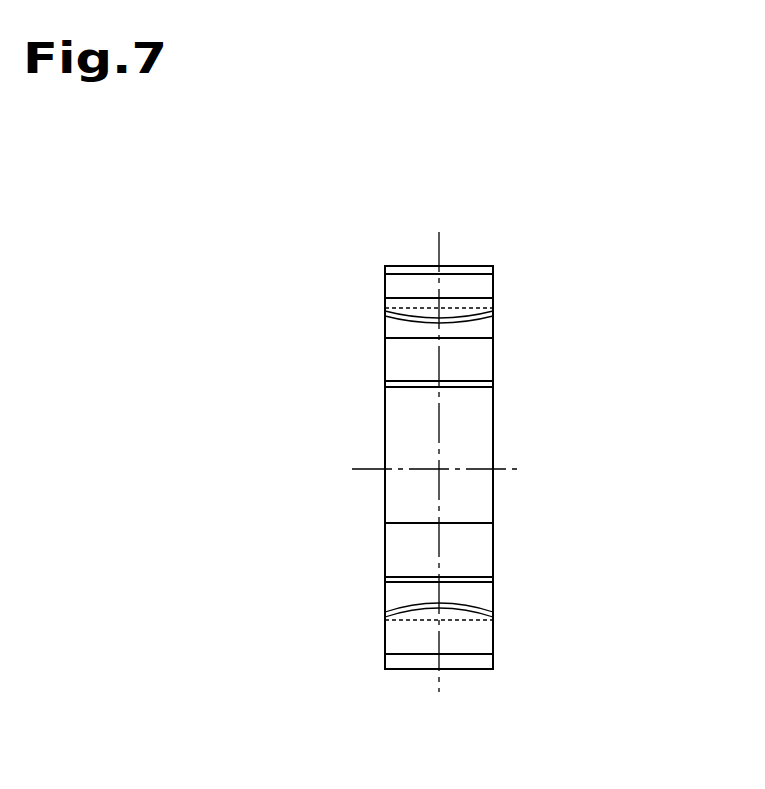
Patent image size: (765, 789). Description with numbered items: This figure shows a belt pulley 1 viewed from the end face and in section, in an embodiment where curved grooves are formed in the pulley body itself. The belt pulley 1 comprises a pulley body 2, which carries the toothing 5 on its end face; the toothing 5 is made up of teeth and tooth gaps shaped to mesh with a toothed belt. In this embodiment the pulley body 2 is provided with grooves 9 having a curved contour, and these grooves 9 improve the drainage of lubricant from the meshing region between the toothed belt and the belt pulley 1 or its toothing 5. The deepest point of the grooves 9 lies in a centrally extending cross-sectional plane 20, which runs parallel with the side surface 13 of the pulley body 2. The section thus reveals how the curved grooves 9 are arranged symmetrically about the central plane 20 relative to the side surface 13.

The belt pulley 1 is at (605, 219).
The pulley body 2 is at (452, 246).
The toothing 5 is at (474, 672).
The grooves 9 is at (496, 284).
The side surface 13 is at (497, 357).
The centrally extending cross-sectional plane 20 is at (440, 684).